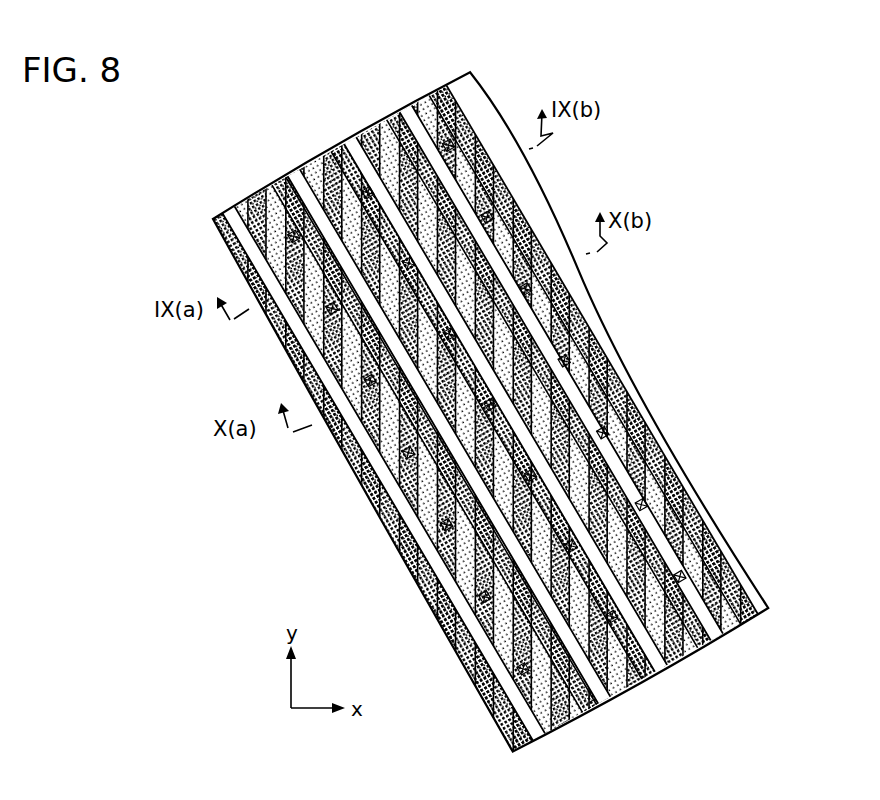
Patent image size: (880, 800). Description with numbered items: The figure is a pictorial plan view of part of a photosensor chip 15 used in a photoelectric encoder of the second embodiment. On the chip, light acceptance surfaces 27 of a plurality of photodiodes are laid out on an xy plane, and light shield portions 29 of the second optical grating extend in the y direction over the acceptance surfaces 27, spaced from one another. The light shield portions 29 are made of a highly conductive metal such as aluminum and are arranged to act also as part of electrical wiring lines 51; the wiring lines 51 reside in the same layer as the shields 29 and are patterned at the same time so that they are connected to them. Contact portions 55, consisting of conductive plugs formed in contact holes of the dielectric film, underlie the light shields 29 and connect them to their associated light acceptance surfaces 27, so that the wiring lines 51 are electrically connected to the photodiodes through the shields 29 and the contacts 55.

The photosensor chip 15 is at (662, 161).
The light acceptance surface 27 is at (362, 140).
The light shield portion 29 is at (318, 314).
The electrical wiring line 51 is at (225, 217).
The contact portion 55 is at (372, 392).